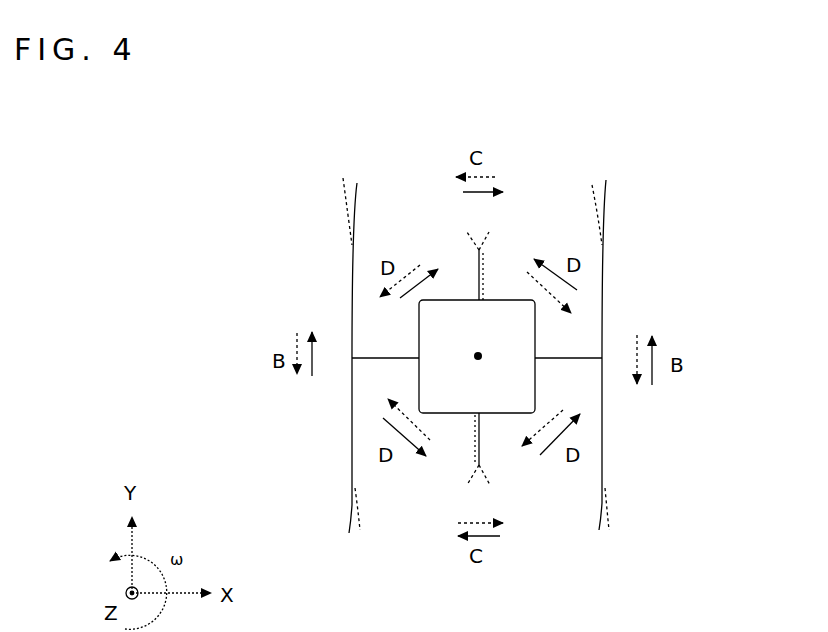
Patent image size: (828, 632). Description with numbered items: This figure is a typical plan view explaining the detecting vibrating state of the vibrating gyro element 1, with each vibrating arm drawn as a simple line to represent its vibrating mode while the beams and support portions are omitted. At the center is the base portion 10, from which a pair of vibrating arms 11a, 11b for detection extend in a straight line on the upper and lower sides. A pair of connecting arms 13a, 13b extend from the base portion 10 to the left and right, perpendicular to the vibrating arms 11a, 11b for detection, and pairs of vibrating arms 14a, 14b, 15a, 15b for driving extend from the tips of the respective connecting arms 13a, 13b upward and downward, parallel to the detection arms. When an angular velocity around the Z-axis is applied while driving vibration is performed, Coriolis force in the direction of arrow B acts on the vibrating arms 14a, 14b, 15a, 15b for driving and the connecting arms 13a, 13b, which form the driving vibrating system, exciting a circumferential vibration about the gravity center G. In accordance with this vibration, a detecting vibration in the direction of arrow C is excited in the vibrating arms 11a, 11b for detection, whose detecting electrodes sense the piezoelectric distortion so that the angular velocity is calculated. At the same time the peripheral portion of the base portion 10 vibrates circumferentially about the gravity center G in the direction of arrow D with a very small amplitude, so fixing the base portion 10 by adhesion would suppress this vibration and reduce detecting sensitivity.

The vibrating gyro element 1 is at (672, 150).
The base portion 10 is at (525, 377).
The vibrating arm for detection 11a is at (470, 262).
The vibrating arm for detection 11b is at (468, 472).
The connecting arm 13a is at (352, 348).
The connecting arm 13b is at (590, 352).
The vibrating arm for driving 14a is at (353, 200).
The vibrating arm for driving 14b is at (348, 506).
The vibrating arm for driving 15a is at (601, 200).
The vibrating arm for driving 15b is at (597, 505).